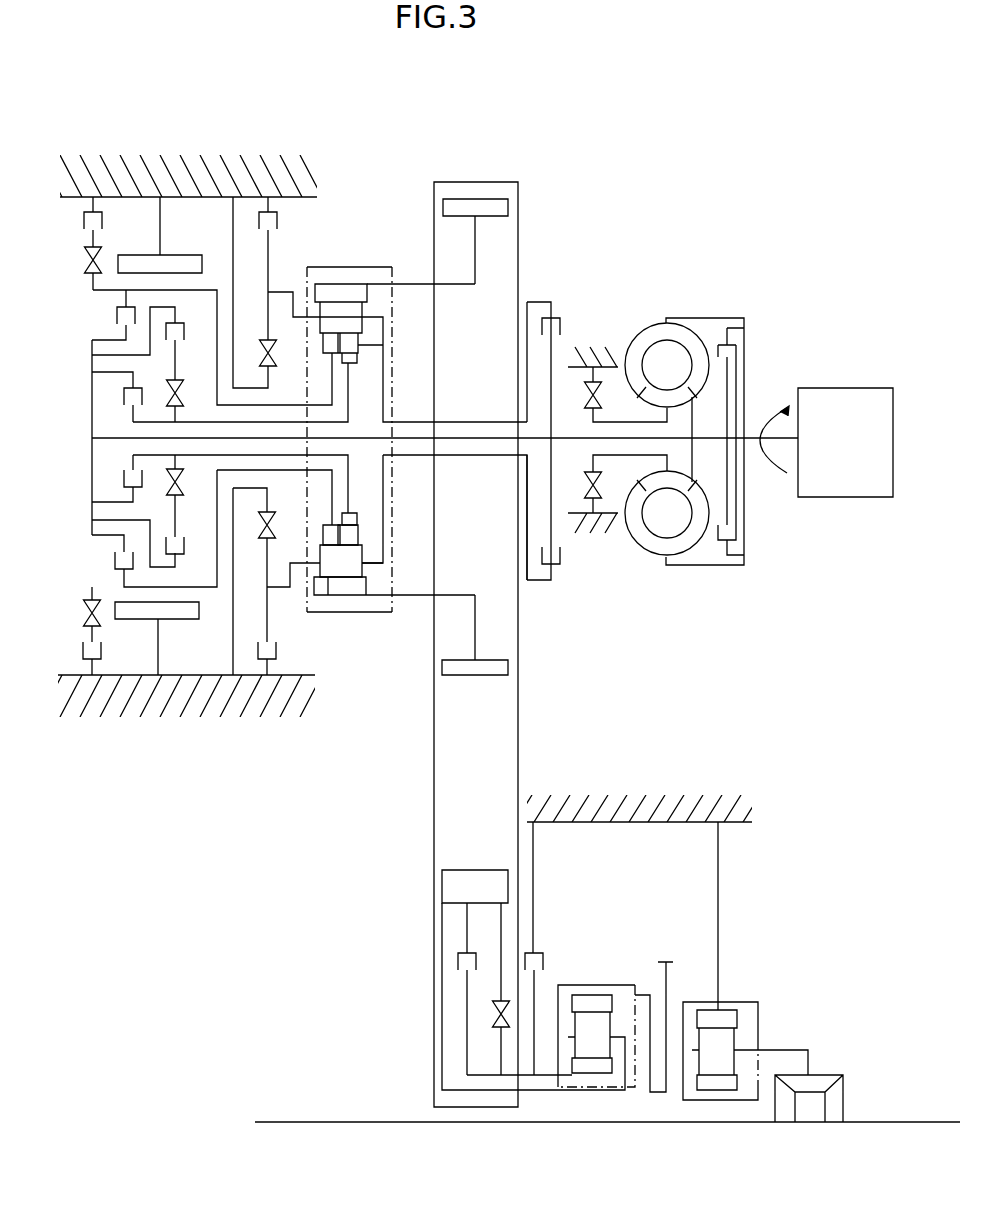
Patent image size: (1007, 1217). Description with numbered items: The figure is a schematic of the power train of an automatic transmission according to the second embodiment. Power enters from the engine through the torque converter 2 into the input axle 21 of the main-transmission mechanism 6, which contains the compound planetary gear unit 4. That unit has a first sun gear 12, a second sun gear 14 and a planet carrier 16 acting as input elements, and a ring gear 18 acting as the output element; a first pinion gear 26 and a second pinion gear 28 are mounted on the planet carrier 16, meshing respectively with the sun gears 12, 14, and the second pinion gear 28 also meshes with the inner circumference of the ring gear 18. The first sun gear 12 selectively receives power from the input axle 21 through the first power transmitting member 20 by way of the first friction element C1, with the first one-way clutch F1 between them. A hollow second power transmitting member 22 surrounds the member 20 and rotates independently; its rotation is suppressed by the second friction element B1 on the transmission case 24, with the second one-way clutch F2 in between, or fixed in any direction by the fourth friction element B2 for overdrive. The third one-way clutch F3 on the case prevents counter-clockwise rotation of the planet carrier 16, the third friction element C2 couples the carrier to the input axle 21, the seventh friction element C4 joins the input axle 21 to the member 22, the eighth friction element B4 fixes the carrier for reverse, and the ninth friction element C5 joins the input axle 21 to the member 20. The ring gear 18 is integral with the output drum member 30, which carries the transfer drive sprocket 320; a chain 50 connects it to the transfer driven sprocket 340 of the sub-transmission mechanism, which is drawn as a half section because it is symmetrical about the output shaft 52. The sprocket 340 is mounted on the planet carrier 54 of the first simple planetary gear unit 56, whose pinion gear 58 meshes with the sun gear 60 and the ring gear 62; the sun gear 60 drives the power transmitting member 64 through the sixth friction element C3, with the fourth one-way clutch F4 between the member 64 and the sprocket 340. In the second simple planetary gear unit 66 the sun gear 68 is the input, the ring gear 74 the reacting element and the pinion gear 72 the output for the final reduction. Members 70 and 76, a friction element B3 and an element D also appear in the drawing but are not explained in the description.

The torque converter 2 is at (752, 334).
The compound planetary gear unit 4 is at (367, 267).
The main-transmission mechanism 6 is at (191, 395).
The first sun gear 12 is at (357, 518).
The second sun gear 14 is at (333, 537).
The planet carrier 16 is at (383, 557).
The ring gear 18 is at (353, 592).
The first power transmitting member 20 is at (150, 463).
The input axle 21 is at (118, 442).
The second power transmitting member 22 is at (222, 478).
The transmission case 24 is at (137, 170).
The first pinion gear 26 is at (358, 538).
The second pinion gear 28 is at (332, 572).
The output drum member 30 is at (410, 284).
The chain 50 is at (520, 716).
The output shaft 52 is at (383, 1124).
The planet carrier 54 is at (475, 1090).
The first simple planetary gear unit 56 is at (620, 985).
The pinion gear 58 is at (580, 1048).
The sun gear 60 is at (590, 1068).
The ring gear 62 is at (592, 995).
The power transmitting member 64 is at (508, 1077).
The second simple planetary gear unit 66 is at (748, 1002).
The sun gear 68 is at (717, 1090).
The shaft 70 is at (652, 1002).
The pinion gear 72 is at (700, 1060).
The ring gear 74 is at (740, 1020).
The shaft 76 is at (718, 875).
The transfer drive sprocket 320 is at (476, 199).
The transfer driven sprocket 340 is at (442, 888).
The second friction element B1 is at (85, 222).
The fourth friction element B2 is at (185, 255).
The brake B3 is at (544, 1014).
The eighth friction element B4 is at (280, 222).
The first friction element C1 is at (186, 351).
The third friction element C2 is at (554, 441).
The sixth friction element C3 is at (458, 963).
The seventh friction element C4 is at (117, 315).
The ninth friction element C5 is at (117, 397).
The first one-way clutch F1 is at (185, 401).
The second one-way clutch F2 is at (85, 262).
The third one-way clutch F3 is at (265, 292).
The fourth one-way clutch F4 is at (493, 1013).
The differential D is at (830, 1125).